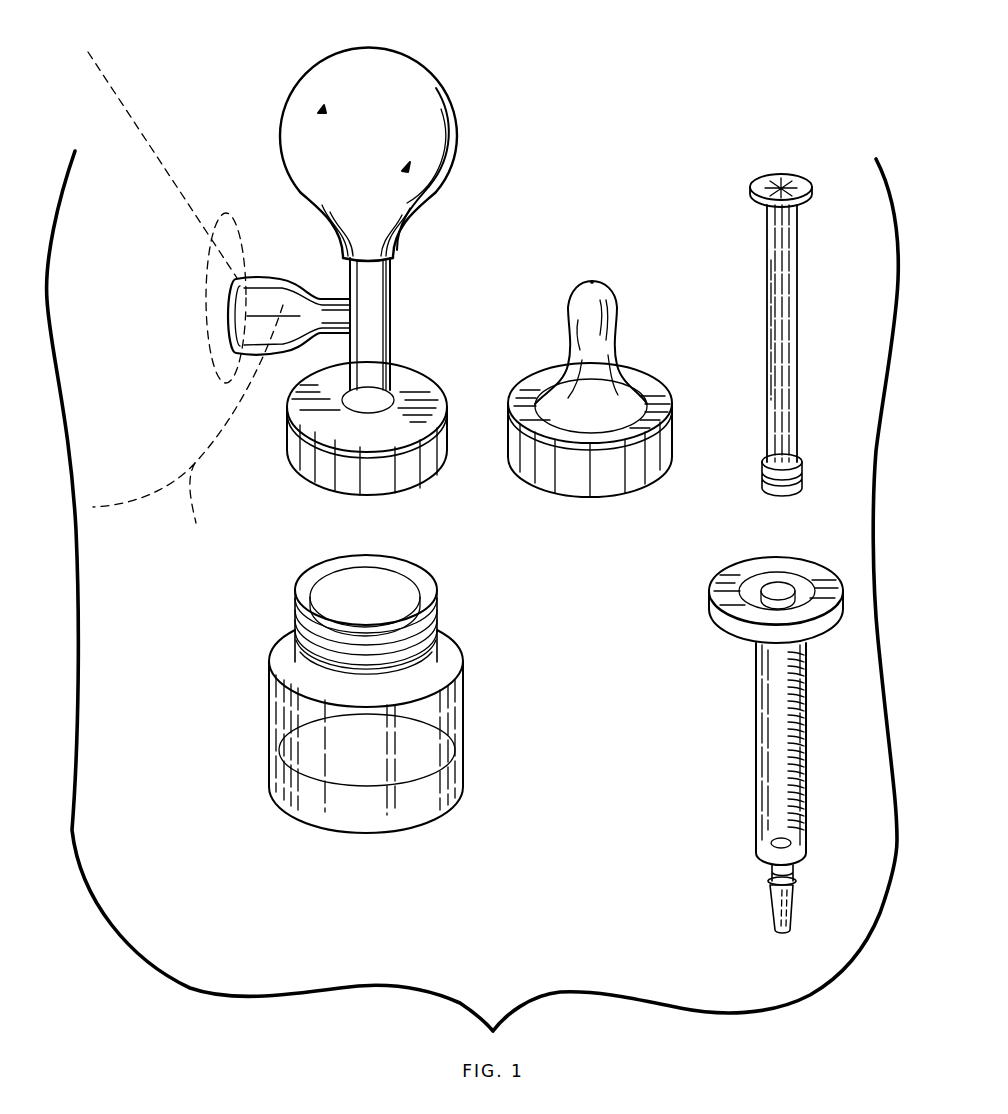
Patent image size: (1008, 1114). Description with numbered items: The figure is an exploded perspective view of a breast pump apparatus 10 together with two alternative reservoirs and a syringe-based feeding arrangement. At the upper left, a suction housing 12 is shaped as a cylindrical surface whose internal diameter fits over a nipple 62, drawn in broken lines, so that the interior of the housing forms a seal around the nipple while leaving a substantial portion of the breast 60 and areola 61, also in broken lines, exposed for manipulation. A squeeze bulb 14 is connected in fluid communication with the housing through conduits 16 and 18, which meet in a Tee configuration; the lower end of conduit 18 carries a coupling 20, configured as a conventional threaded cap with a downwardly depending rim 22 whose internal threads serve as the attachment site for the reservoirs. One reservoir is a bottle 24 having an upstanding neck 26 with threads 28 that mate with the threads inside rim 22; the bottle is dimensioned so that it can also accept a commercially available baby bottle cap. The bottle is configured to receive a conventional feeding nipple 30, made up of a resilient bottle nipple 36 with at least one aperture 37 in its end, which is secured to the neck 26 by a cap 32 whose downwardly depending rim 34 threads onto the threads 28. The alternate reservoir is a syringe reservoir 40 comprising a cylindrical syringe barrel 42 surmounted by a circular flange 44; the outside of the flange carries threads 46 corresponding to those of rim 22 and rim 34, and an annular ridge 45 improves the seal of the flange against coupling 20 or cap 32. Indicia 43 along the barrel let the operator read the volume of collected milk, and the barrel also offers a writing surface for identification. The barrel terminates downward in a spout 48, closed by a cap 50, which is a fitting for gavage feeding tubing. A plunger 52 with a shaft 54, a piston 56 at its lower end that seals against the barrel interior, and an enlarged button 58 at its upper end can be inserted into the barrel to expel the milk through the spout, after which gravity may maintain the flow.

The breast pump apparatus 10 is at (462, 93).
The suction housing 12 is at (262, 278).
The squeeze bulb 14 is at (367, 67).
The conduit 16 is at (325, 337).
The conduit 18 is at (230, 293).
The coupling 20 is at (418, 397).
The rim 22 is at (420, 460).
The bottle 24 is at (480, 697).
The neck 26 is at (438, 608).
The threads 28 is at (295, 603).
The feeding nipple 30 is at (640, 295).
The cap 32 is at (650, 397).
The rim 34 is at (660, 445).
The bottle nipple 36 is at (587, 300).
The aperture 37 is at (592, 282).
The syringe reservoir 40 is at (735, 748).
The syringe barrel 42 is at (767, 690).
The indicia 43 is at (800, 737).
The circular flange 44 is at (727, 597).
The annular ridge 45 is at (797, 570).
The threads 46 is at (715, 615).
The spout 48 is at (790, 867).
The cap 50 is at (793, 899).
The plunger 52 is at (812, 288).
The shaft 54 is at (800, 353).
The piston 56 is at (802, 462).
The button 58 is at (783, 183).
The breast 60 is at (203, 527).
The areola 61 is at (219, 224).
The nipple 62 is at (255, 394).